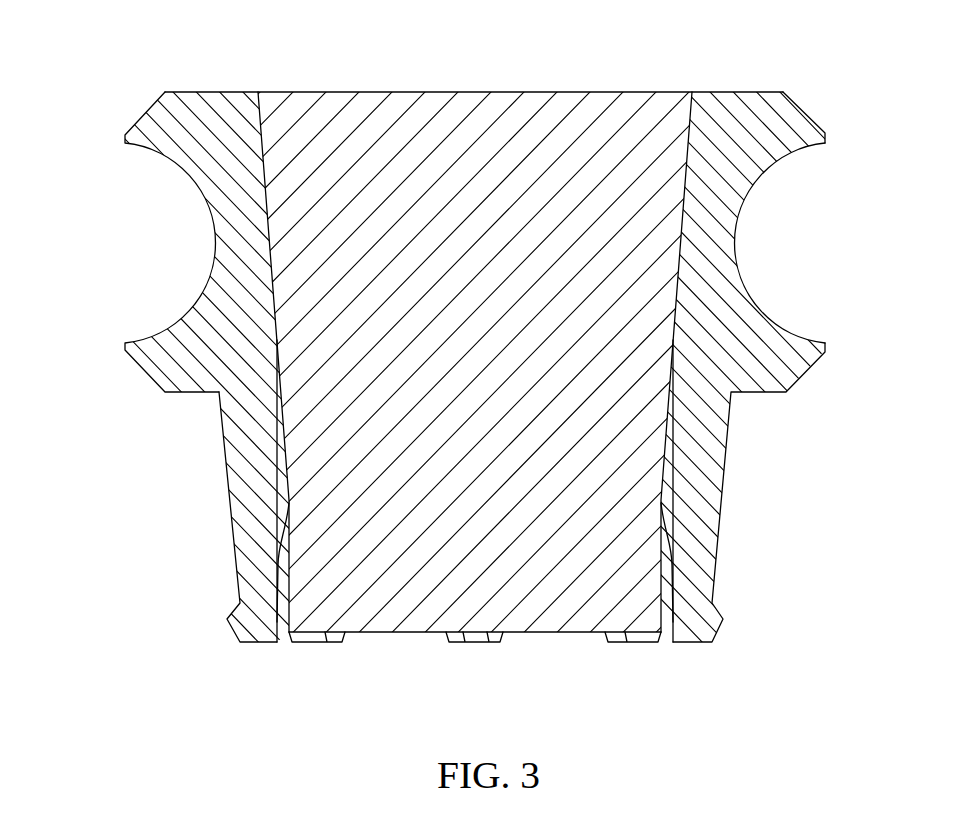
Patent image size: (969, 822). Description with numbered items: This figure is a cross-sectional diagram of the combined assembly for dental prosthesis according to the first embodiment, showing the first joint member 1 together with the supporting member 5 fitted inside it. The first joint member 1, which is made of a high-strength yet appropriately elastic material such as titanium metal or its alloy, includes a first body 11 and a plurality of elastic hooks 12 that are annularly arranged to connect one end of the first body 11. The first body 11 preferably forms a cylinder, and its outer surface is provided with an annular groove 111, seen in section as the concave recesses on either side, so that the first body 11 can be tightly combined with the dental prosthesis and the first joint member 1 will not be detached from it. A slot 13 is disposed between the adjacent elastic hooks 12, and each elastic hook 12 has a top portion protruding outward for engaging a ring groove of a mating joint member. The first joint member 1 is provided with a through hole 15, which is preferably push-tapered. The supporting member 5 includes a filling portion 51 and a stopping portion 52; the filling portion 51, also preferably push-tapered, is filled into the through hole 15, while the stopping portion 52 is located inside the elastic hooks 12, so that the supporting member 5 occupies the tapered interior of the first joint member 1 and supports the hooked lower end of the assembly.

The first joint member 1 is at (813, 82).
The supporting member 5 is at (542, 92).
The first body 11 is at (103, 88).
The annular groove 111 is at (733, 272).
The elastic hooks 12 is at (243, 622).
The slot 13 is at (288, 637).
The through hole 15 is at (262, 139).
The filling portion 51 is at (676, 362).
The stopping portion 52 is at (665, 550).